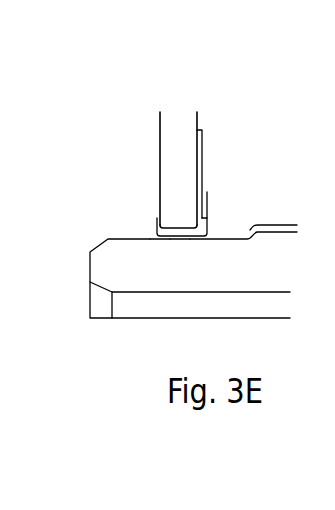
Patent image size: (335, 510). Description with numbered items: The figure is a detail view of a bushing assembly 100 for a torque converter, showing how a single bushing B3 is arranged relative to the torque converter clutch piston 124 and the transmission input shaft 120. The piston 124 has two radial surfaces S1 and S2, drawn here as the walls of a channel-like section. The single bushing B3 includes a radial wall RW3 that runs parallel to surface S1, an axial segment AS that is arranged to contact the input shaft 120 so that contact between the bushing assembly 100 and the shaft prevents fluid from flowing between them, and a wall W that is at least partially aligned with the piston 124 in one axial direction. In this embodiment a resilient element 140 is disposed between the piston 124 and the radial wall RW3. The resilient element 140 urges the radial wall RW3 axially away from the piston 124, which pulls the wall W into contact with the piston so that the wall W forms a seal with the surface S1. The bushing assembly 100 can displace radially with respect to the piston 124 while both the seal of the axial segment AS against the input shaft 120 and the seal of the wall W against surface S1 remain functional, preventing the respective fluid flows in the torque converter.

The bushing assembly 100 is at (186, 82).
The piston 124 is at (172, 117).
The radial surface S1 is at (160, 148).
The radial surface S2 is at (198, 120).
The resilient element 140 is at (203, 175).
The radial wall RW3 is at (207, 211).
The wall W is at (155, 230).
The axial segment AS is at (180, 240).
The single bushing B3 is at (220, 240).
The transmission input shaft 120 is at (110, 263).